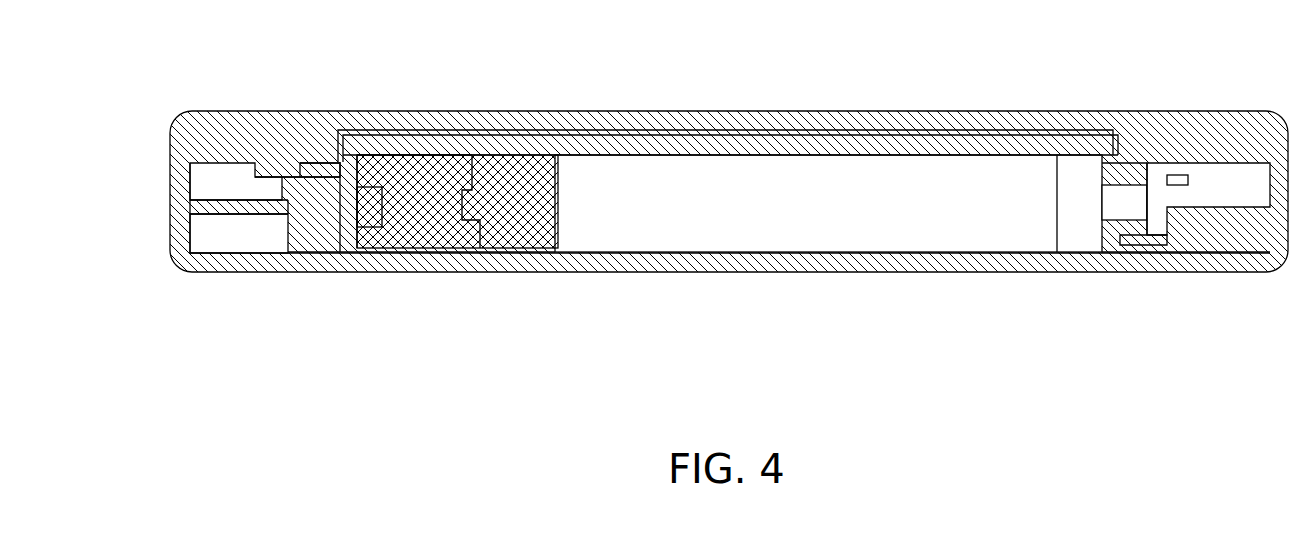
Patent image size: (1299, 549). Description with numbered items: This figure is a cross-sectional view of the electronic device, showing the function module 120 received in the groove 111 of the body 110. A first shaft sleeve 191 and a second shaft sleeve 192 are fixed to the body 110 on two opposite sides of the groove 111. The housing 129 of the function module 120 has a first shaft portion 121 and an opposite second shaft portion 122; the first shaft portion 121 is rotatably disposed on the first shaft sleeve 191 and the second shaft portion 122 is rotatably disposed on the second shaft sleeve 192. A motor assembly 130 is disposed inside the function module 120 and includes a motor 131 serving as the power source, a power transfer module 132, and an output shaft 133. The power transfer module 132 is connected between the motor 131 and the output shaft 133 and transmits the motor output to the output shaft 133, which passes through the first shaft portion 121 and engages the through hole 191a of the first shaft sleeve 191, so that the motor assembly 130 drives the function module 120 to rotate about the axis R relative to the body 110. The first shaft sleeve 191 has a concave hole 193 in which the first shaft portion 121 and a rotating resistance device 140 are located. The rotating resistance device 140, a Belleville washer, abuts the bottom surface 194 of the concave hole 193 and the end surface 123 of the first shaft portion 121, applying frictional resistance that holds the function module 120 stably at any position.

The body 110 is at (1186, 272).
The groove 111 is at (1020, 134).
The function module 120 is at (760, 304).
The first shaft portion 121 is at (318, 150).
The second shaft portion 122 is at (1139, 175).
The end surface 123 is at (362, 228).
The housing 129 is at (873, 263).
The motor assembly 130 is at (457, 270).
The motor 131 is at (500, 222).
The power transfer module 132 is at (422, 222).
The output shaft 133 is at (377, 249).
The rotating resistance device 140 is at (333, 227).
The first shaft sleeve 191 is at (278, 155).
The through hole 191a is at (293, 216).
The second shaft sleeve 192 is at (1168, 166).
The concave hole 193 is at (302, 166).
The bottom surface 194 is at (287, 188).
The axis R is at (292, 207).